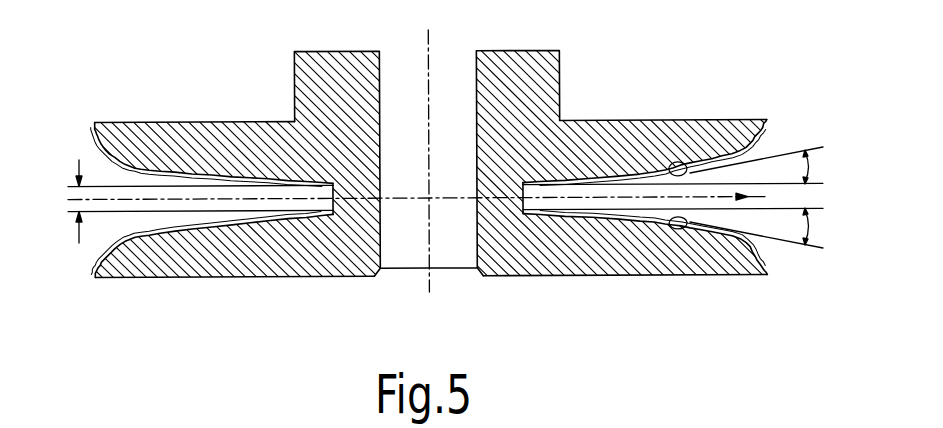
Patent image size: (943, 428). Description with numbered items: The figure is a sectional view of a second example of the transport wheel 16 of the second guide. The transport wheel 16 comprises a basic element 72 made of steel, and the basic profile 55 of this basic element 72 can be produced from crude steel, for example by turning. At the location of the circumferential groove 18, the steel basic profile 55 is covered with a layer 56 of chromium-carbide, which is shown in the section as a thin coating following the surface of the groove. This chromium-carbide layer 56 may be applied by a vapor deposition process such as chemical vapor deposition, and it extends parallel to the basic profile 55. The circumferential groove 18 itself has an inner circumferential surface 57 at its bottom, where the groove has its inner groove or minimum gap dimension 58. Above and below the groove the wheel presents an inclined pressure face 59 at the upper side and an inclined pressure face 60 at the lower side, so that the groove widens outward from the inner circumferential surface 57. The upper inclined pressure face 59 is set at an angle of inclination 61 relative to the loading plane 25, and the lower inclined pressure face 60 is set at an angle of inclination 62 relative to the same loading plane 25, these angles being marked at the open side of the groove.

The transport wheel 16 is at (604, 78).
The basic element 72 is at (328, 98).
The basic profile 55 is at (640, 119).
The chromium-carbide layer 56 is at (760, 138).
The inclined pressure face 59 is at (678, 177).
The inclined pressure face 60 is at (673, 218).
The inner circumferential surface 57 is at (326, 203).
The loading plane 25 is at (625, 197).
The circumferential groove 18 is at (116, 234).
The minimum gap dimension 58 is at (61, 214).
The angle of inclination 61 is at (813, 165).
The angle of inclination 62 is at (813, 228).